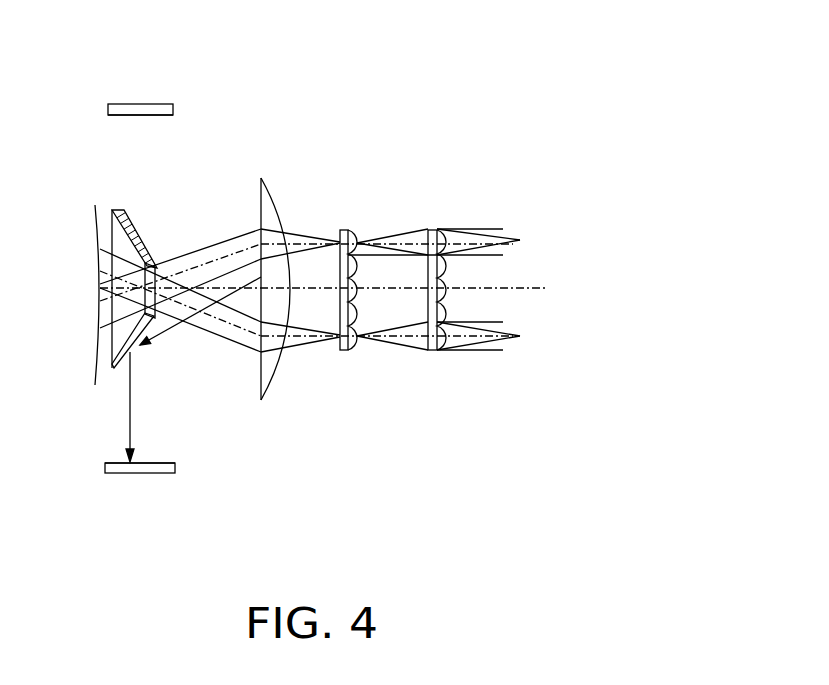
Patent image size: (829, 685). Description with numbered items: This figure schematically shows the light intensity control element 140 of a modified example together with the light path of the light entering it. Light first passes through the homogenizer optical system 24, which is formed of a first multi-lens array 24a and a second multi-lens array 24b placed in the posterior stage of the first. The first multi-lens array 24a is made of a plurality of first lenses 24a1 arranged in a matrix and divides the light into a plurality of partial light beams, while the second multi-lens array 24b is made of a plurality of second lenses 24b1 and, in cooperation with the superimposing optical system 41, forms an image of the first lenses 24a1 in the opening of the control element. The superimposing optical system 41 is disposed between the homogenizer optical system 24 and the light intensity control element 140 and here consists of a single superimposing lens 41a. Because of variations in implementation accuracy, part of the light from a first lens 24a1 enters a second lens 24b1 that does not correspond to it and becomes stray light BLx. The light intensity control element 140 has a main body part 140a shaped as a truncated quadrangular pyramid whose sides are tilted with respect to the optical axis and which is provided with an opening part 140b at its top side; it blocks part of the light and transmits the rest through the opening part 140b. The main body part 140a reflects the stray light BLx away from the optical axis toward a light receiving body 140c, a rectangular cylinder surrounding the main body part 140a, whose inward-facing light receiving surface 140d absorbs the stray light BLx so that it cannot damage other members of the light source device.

The light intensity control element 140 is at (175, 272).
The main body part 140a is at (137, 230).
The opening part 140b is at (160, 276).
The light receiving body 140c is at (158, 103).
The light receiving surface 140d is at (152, 115).
The superimposing optical system 41 is at (283, 283).
The superimposing lens 41a is at (276, 380).
The homogenizer optical system 24 is at (420, 272).
The first multi-lens array 24a is at (456, 294).
The first lens 24a1 is at (450, 318).
The second multi-lens array 24b is at (373, 294).
The second lens 24b1 is at (360, 318).
The stray light BLx is at (172, 338).